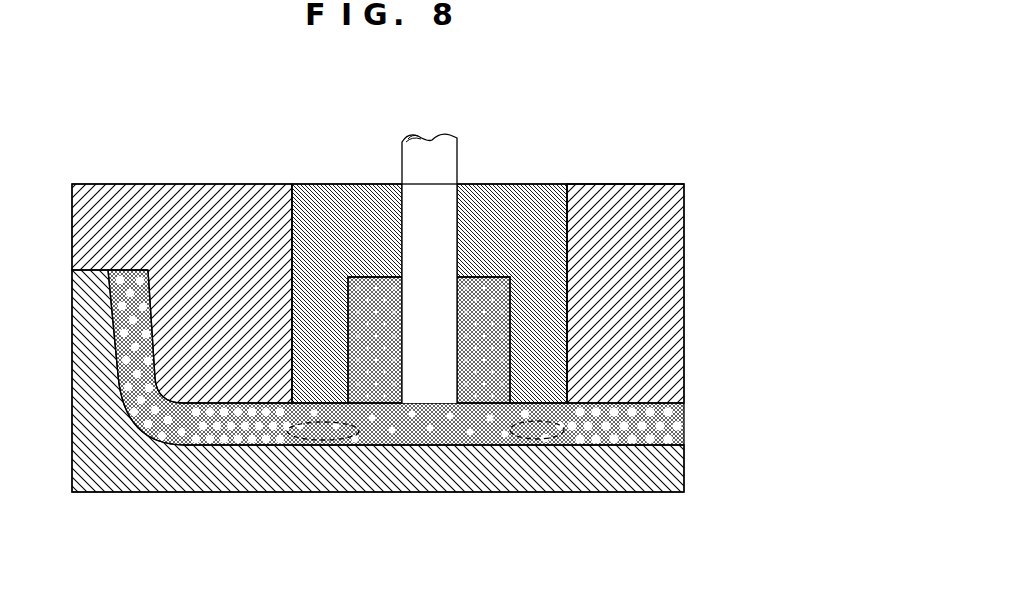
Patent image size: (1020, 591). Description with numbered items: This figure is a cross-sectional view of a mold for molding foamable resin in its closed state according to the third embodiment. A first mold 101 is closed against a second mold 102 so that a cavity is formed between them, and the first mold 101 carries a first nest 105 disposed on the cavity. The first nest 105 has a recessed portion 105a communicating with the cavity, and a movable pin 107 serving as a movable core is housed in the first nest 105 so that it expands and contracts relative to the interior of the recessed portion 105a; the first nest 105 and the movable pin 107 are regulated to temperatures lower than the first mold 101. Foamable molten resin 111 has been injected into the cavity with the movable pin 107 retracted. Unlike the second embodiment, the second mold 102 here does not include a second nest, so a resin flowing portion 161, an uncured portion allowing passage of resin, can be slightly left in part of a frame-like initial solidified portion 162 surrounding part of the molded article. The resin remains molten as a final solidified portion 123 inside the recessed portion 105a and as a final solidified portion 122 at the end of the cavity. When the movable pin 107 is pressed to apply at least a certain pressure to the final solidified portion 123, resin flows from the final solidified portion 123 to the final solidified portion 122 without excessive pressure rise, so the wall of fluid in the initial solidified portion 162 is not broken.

The first mold 101 is at (665, 298).
The second mold 102 is at (664, 473).
The first nest 105 is at (336, 190).
The recessed portion 105a is at (648, 190).
The movable pin 107 is at (438, 158).
The foamable molten resin 111 is at (684, 423).
The final solidified portion 122 is at (162, 444).
The final solidified portion 123 is at (485, 316).
The resin flowing portion 161 is at (283, 446).
The initial solidified portion 162 is at (356, 441).